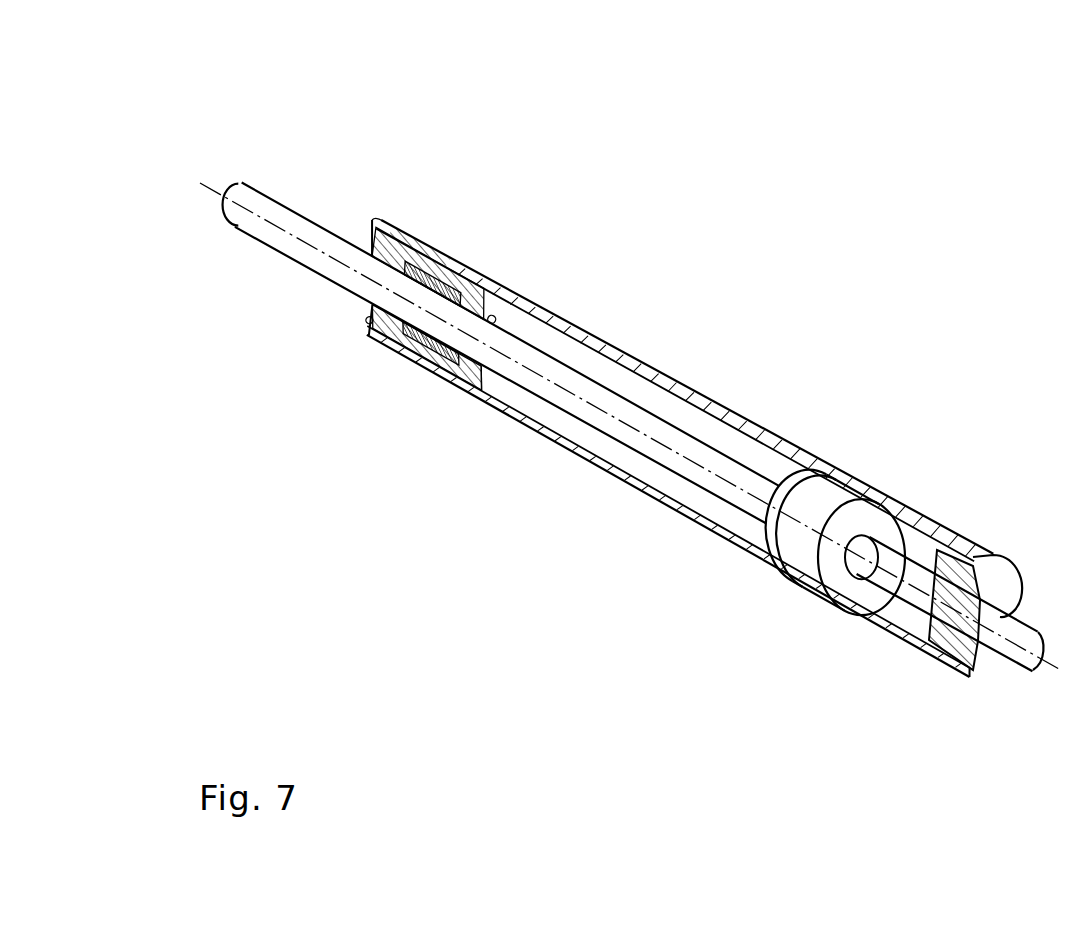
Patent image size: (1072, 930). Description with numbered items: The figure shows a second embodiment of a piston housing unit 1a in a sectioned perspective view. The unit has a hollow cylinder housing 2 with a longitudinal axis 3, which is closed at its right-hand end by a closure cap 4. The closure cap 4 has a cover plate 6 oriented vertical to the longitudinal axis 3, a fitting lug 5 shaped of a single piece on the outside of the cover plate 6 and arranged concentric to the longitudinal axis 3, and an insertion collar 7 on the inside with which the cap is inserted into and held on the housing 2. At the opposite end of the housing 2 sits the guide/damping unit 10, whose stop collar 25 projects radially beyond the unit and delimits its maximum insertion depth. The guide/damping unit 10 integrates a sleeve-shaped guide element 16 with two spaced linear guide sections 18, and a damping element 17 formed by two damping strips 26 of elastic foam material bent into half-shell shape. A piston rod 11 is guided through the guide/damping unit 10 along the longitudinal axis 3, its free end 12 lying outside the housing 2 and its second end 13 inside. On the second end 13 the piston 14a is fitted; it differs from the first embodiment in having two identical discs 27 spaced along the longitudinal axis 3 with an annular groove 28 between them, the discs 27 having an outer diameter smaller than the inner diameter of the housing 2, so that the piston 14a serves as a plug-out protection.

The piston housing unit 1a is at (630, 278).
The hollow cylinder housing 2 is at (685, 383).
The longitudinal axis 3 is at (546, 377).
The closure cap 4 is at (997, 587).
The fitting lug 5 is at (1016, 662).
The cover plate 6 is at (975, 671).
The insertion collar 7 is at (950, 558).
The guide/damping unit 10 is at (370, 336).
The piston rod 11 is at (309, 212).
The free end 12 is at (266, 187).
The second end 13 is at (768, 479).
The piston 14a is at (822, 508).
The guide element 16 is at (412, 352).
The damping element 17 is at (443, 284).
The linear guide sections 18 is at (496, 316).
The stop collar 25 is at (373, 222).
The damping strips 26 is at (457, 360).
The discs 27 is at (762, 546).
The annular groove 28 is at (800, 552).